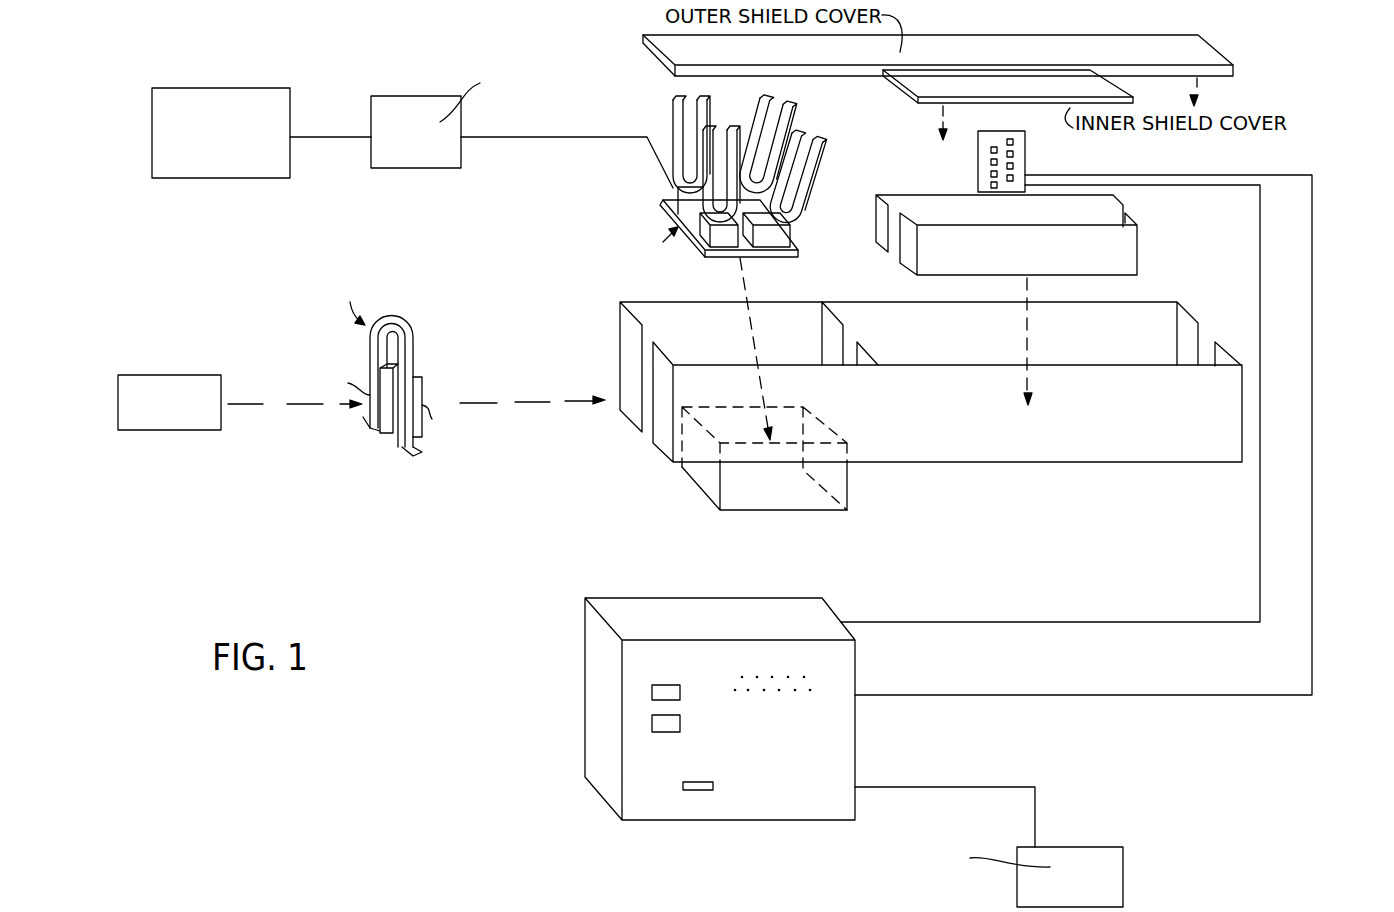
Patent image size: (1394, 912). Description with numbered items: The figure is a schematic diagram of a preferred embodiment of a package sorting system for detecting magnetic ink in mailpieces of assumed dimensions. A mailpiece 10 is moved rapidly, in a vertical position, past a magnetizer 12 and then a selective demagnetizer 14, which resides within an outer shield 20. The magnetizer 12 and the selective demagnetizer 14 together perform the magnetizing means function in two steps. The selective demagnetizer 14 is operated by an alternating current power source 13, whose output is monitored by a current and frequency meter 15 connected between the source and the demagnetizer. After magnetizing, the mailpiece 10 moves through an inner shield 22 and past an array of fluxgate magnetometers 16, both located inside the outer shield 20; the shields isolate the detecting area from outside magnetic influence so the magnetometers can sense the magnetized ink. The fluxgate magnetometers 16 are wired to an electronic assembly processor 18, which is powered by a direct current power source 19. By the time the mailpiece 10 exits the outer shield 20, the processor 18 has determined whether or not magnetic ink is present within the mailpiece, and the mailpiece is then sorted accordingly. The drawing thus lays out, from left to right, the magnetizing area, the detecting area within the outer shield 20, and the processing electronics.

The mailpiece 10 is at (178, 430).
The magnetizer 12 is at (413, 355).
The alternating current power source 13 is at (237, 178).
The selective demagnetizer 14 is at (698, 248).
The current and frequency meter 15 is at (427, 168).
The fluxgate magnetometers 16 is at (1015, 131).
The electronic assembly processor 18 is at (822, 598).
The direct current power source 19 is at (1100, 847).
The outer shield 20 is at (1082, 462).
The inner shield 22 is at (1137, 255).